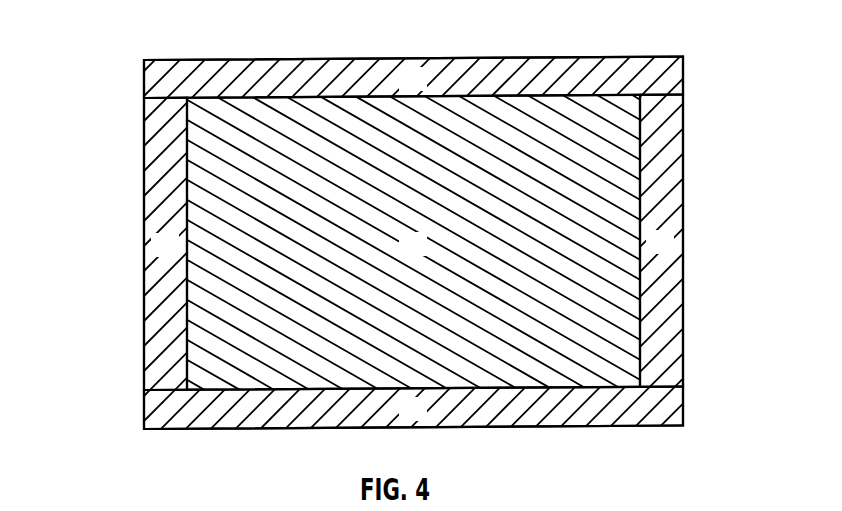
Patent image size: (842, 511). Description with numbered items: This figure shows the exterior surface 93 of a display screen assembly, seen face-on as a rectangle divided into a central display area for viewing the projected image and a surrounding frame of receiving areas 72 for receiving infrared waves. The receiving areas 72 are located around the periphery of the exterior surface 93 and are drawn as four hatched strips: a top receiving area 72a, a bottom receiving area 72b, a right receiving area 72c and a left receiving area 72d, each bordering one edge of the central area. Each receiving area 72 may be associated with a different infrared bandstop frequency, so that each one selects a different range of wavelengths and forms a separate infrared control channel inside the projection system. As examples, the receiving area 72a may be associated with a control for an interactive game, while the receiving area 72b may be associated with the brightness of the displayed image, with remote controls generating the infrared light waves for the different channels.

The receiving areas 72 is at (413, 243).
The receiving area 72a is at (248, 60).
The receiving area 72b is at (557, 427).
The receiving area 72c is at (665, 333).
The receiving area 72d is at (162, 201).
The exterior surface 93 is at (683, 200).